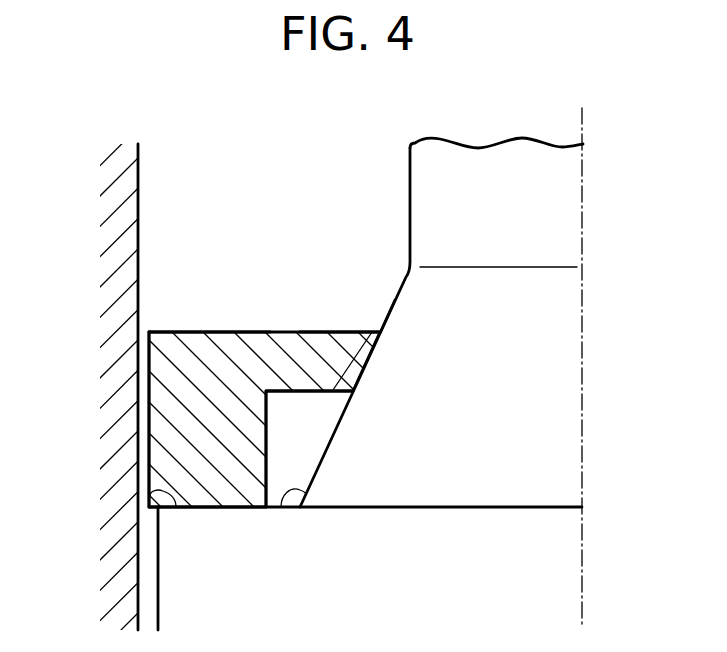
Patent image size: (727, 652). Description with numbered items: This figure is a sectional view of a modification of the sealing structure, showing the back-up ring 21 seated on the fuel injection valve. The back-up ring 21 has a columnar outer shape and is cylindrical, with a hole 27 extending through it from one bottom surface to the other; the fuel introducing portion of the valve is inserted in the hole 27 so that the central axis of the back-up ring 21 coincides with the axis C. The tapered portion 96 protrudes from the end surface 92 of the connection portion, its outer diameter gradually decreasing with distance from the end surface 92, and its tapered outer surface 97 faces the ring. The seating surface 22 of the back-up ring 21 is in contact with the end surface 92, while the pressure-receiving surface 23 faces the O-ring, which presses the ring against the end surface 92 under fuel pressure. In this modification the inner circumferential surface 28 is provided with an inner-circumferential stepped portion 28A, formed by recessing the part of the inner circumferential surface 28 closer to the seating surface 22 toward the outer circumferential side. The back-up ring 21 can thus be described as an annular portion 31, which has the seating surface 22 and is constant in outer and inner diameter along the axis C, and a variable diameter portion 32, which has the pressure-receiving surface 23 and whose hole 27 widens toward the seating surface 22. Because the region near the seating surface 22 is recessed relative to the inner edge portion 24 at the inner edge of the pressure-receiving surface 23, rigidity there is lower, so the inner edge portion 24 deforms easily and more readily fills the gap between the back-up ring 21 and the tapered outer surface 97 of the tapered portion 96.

The back-up ring 21 is at (290, 303).
The seating surface 22 is at (215, 510).
The pressure-receiving surface 23 is at (268, 334).
The inner edge portion 24 is at (360, 333).
The hole 27 is at (381, 336).
The inner circumferential surface 28 is at (338, 378).
The inner-circumferential stepped portion 28A is at (267, 467).
The annular portion 31 is at (158, 421).
The variable diameter portion 32 is at (205, 334).
The end surface 92 is at (148, 494).
The tapered portion 96 is at (567, 388).
The tapered outer surface 97 is at (283, 510).
The axis C is at (584, 118).